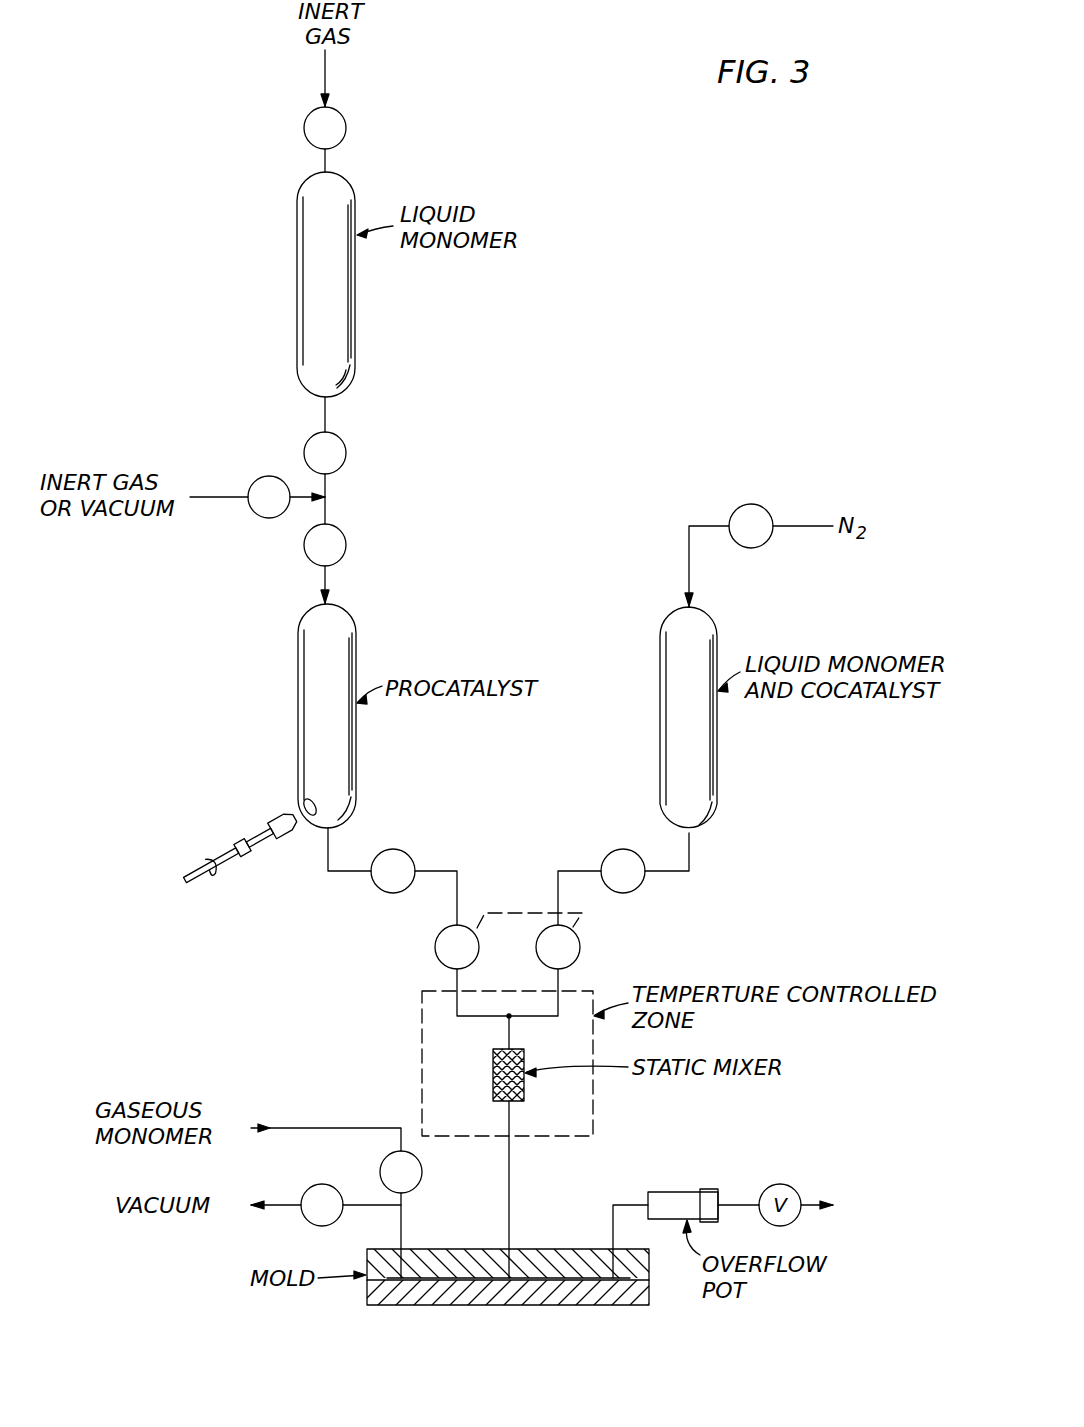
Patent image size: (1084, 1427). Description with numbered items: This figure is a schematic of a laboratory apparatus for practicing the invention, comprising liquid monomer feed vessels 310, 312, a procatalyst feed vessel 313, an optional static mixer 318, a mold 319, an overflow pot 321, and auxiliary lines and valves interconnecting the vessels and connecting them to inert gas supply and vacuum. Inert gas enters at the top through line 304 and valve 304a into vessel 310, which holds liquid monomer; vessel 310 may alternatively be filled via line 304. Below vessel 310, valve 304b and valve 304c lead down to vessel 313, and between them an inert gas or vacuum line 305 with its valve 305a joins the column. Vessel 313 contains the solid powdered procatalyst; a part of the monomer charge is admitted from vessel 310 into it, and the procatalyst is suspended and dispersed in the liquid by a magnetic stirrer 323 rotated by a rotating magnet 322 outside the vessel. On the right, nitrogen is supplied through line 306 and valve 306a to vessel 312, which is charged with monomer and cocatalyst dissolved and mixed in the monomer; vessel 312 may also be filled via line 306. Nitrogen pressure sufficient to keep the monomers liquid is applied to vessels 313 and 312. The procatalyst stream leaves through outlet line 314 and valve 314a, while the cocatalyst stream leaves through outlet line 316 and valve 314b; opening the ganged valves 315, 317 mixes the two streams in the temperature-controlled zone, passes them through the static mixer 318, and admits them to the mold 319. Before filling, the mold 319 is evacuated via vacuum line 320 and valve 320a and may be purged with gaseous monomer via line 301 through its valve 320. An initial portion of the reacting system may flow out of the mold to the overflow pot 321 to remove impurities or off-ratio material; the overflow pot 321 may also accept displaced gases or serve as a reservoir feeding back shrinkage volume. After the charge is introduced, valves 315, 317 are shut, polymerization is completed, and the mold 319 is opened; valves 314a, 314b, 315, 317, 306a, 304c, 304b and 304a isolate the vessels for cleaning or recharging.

The gaseous monomer purge line 301 is at (308, 1128).
The inert gas line 304 is at (325, 70).
The valve 304a is at (304, 128).
The valve 304b is at (346, 440).
The valve 304c is at (346, 546).
The inert gas or vacuum line 305 is at (220, 497).
The valve 305a is at (262, 518).
The nitrogen line 306 is at (798, 527).
The valve 306a is at (751, 504).
The liquid monomer feed vessel 310 is at (297, 230).
The liquid monomer feed vessel 312 is at (660, 738).
The procatalyst feed vessel 313 is at (298, 668).
The outlet line 314 is at (325, 858).
The valve 314a is at (405, 852).
The valve 314b is at (612, 857).
The ganged valve 315 is at (435, 947).
The outlet line 316 is at (690, 868).
The ganged valve 317 is at (580, 947).
The static mixer 318 is at (525, 1090).
The mold 319 is at (367, 1302).
The vacuum line 320 is at (272, 1205).
The valve 320a is at (307, 1222).
The overflow pot 321 is at (680, 1192).
The rotating magnet 322 is at (215, 860).
The magnetic stirrer 323 is at (304, 797).